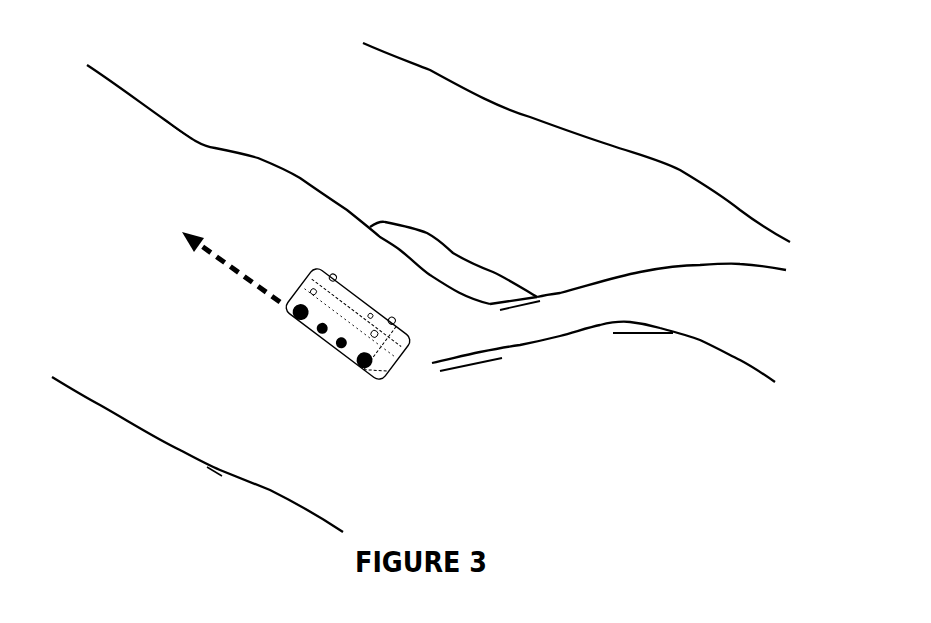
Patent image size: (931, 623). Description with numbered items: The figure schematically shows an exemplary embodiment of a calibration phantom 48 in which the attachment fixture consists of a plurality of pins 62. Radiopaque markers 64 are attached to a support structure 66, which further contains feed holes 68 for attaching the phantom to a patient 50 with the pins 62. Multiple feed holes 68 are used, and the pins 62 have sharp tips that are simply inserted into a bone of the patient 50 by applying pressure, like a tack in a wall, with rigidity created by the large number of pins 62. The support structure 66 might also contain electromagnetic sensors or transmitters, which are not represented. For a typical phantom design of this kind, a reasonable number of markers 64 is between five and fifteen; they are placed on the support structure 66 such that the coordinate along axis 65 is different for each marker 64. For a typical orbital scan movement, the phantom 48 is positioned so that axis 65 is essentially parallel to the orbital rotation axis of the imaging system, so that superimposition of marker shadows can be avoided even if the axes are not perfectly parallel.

The calibration phantom 48 is at (403, 253).
The patient 50 is at (252, 225).
The pins 62 is at (334, 274).
The radiopaque markers 64 is at (360, 360).
The axis 65 is at (232, 268).
The support structure 66 is at (401, 363).
The feed holes 68 is at (373, 312).